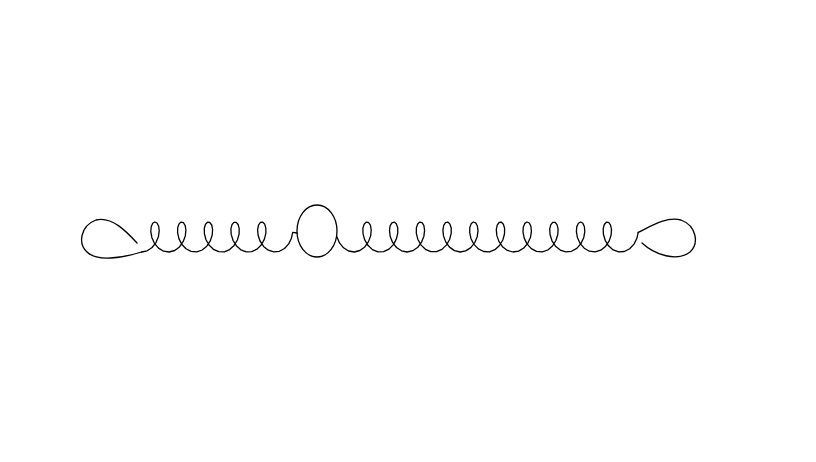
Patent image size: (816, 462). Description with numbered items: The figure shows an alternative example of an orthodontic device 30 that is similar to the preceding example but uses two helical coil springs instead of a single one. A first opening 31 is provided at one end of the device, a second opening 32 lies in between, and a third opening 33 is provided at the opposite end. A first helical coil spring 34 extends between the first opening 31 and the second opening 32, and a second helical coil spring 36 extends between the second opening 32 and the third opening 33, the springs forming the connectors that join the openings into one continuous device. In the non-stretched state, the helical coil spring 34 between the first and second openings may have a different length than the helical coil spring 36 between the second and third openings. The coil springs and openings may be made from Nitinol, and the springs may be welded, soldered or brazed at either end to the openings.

The coil spring assembly 30 is at (490, 112).
The first opening 31 is at (90, 219).
The second opening 32 is at (316, 206).
The third opening 33 is at (666, 220).
The helical coil spring 34 is at (188, 297).
The helical coil spring 36 is at (485, 252).